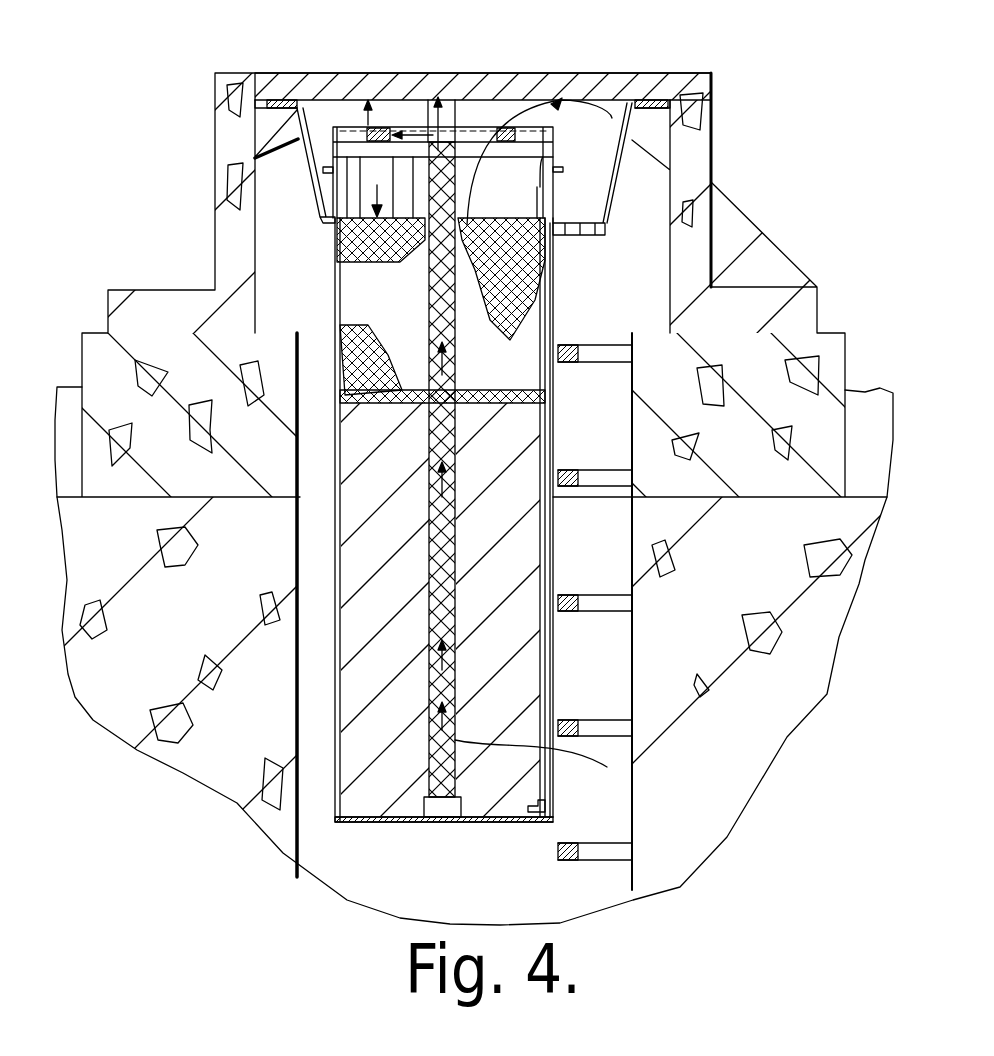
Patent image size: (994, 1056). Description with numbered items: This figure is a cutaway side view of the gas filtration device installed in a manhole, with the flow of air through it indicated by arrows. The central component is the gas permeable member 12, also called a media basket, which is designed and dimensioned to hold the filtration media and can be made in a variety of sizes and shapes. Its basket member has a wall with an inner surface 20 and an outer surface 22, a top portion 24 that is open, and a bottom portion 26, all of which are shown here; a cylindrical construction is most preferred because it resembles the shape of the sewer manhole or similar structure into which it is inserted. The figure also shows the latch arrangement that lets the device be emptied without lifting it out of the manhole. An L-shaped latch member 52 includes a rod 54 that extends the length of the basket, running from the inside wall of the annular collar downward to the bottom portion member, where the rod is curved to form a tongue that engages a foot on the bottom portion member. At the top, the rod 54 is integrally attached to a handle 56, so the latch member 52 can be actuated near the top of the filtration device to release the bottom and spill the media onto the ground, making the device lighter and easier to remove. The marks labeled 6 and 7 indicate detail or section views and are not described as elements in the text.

The gas permeable member 12 is at (275, 745).
The inner surface 20 is at (340, 767).
The outer surface 22 is at (550, 757).
The top portion 24 is at (375, 200).
The bottom portion 26 is at (455, 818).
The L-shaped latch member 52 is at (532, 620).
The rod 54 is at (537, 683).
The handle 56 is at (655, 98).
The section detail 6 is at (503, 832).
The granular fill / section detail 7 is at (530, 283).